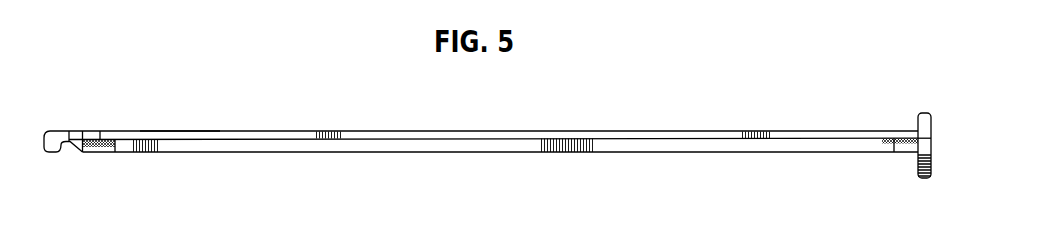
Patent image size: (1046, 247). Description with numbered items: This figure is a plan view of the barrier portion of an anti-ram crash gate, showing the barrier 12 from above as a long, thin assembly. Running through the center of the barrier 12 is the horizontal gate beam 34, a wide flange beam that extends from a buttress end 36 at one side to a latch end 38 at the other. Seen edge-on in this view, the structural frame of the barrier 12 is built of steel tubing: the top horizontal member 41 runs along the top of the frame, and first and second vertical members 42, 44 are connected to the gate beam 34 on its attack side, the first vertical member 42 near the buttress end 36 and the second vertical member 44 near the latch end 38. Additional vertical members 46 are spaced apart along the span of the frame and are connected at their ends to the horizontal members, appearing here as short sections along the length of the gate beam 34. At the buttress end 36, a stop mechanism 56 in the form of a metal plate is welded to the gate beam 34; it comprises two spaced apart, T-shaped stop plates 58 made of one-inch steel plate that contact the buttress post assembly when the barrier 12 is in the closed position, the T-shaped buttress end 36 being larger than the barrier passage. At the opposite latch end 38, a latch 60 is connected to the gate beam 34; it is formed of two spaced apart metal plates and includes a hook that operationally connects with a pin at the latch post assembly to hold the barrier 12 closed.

The barrier 12 is at (406, 99).
The gate beam 34 is at (573, 146).
The buttress end 36 is at (907, 155).
The latch end 38 is at (92, 154).
The top horizontal member 41 is at (172, 131).
The first vertical member 42 is at (903, 137).
The second vertical member 44 is at (87, 136).
The vertical members 46 is at (292, 134).
The stop mechanism 56 is at (935, 134).
The stop plates 58 is at (933, 162).
The latch 60 is at (45, 130).